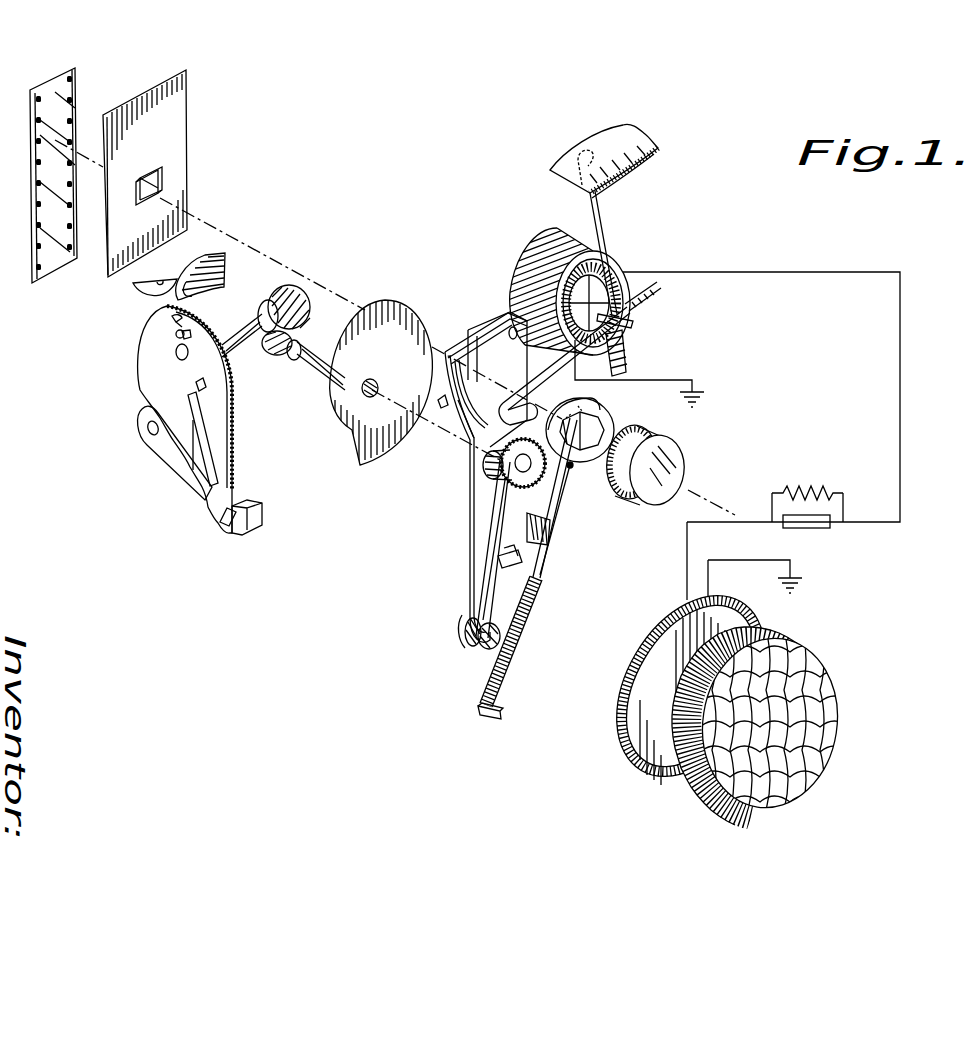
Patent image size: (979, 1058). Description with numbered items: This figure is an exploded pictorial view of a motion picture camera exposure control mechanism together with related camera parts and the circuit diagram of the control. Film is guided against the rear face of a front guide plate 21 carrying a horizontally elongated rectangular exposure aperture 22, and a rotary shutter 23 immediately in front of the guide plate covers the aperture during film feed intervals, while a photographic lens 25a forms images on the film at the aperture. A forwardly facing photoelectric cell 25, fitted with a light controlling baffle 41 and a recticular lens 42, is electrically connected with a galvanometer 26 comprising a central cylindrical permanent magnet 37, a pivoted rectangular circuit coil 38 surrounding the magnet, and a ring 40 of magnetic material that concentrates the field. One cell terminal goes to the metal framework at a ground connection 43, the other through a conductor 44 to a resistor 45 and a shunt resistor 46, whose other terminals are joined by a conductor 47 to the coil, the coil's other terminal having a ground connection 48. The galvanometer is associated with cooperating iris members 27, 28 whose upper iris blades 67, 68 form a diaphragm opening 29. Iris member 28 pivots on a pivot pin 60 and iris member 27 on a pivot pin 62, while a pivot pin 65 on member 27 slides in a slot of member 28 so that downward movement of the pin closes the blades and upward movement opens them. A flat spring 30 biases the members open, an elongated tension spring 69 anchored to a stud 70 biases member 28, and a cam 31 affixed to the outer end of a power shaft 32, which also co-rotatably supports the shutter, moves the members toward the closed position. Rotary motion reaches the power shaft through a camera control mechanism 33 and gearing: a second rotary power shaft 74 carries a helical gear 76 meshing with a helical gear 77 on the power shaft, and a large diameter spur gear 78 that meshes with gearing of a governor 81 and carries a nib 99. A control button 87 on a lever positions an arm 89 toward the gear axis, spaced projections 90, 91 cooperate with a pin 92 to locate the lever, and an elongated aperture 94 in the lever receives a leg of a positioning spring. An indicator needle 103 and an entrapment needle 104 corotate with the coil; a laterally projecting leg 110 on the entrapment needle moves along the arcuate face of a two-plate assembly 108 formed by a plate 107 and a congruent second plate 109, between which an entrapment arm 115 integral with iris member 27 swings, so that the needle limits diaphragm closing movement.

The front guide plate 21 is at (185, 176).
The exposure aperture 22 is at (150, 178).
The rotary shutter 23 is at (398, 312).
The photoelectric cell 25 is at (624, 730).
The photographic lens 25a is at (688, 461).
The galvanometer 26 is at (636, 241).
The iris member 27 is at (468, 527).
The iris member 28 is at (552, 505).
The diaphragm opening 29 is at (612, 420).
The flat spring 30 is at (477, 598).
The cam 31 is at (500, 480).
The power shaft 32 is at (318, 372).
The mechanism 33 is at (168, 469).
The permanent magnet 37 is at (580, 296).
The circuit coil 38 is at (630, 278).
The ring 40 is at (551, 291).
The baffle 41 is at (780, 628).
The recticular lens 42 is at (836, 656).
The ground connection 43 is at (810, 581).
The conductor 44 is at (687, 540).
The resistor 45 is at (812, 528).
The resistor 46 is at (810, 488).
The conductor 47 is at (900, 410).
The ground connection 48 is at (710, 397).
The pivot pin 60 is at (556, 540).
The pivot pin 62 is at (488, 649).
The pivot pin 65 is at (522, 560).
The iris blade 67 is at (590, 406).
The iris blade 68 is at (572, 466).
The tension spring 69 is at (524, 640).
The stud 70 is at (502, 713).
The second rotary power shaft 74 is at (240, 338).
The helical gear 76 is at (300, 290).
The helical gear 77 is at (275, 356).
The large diameter spur gear 78 is at (135, 340).
The governor 81 is at (134, 298).
The control button 87 is at (248, 525).
The arm 89 is at (198, 432).
The projection 90 is at (178, 355).
The projection 91 is at (172, 318).
The pin 92 is at (176, 337).
The elongated aperture 94 is at (222, 524).
The nib 99 is at (205, 387).
The indicator needle 103 is at (595, 207).
The entrapment needle 104 is at (555, 356).
The plate 107 is at (456, 358).
The two-plate assembly 108 is at (481, 306).
The second plate 109 is at (485, 365).
The leg 110 is at (442, 410).
The entrapment arm 115 is at (400, 402).